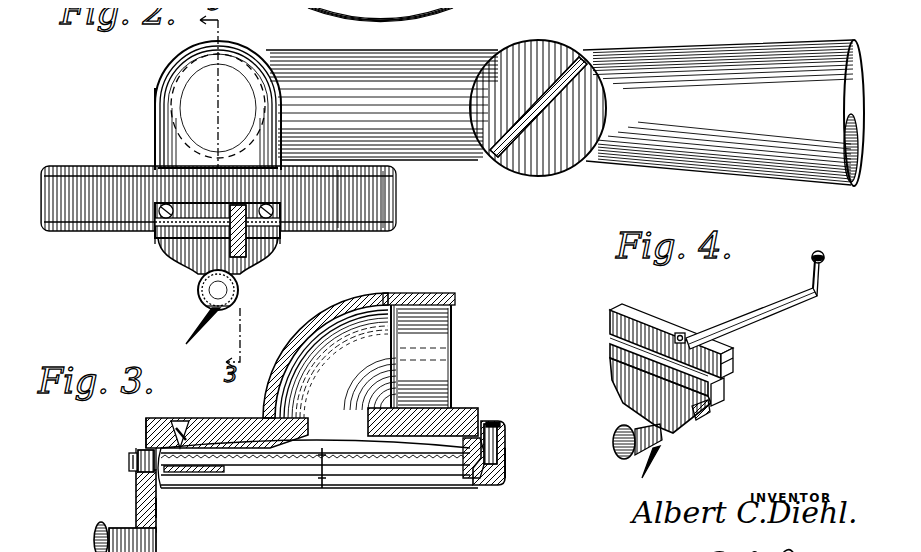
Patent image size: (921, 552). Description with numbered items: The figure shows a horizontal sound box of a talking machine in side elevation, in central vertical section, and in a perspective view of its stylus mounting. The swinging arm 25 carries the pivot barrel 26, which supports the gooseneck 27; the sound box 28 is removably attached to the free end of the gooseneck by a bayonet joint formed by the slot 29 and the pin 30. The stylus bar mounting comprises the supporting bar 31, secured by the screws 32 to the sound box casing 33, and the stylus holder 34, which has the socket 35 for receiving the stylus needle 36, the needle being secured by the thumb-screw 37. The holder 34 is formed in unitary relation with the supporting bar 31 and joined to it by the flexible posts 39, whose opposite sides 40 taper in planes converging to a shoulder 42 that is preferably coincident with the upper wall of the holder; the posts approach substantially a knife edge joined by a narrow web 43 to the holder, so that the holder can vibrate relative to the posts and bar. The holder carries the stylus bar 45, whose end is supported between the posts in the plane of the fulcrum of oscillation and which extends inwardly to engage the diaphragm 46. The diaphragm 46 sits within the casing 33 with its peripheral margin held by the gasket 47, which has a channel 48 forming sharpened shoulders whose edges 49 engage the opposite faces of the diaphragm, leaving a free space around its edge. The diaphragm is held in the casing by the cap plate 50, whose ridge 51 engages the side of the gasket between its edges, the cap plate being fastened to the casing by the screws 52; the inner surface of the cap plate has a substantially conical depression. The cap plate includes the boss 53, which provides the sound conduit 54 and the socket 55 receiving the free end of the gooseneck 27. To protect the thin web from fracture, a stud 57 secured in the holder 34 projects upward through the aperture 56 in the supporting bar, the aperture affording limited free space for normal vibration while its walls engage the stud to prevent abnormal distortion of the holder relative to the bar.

In FIG. 2, the swinging arm 25 is at (760, 58).
In FIG. 2, the pivot barrel 26 is at (515, 62).
In FIG. 2, the gooseneck 27 is at (390, 62).
In FIG. 2, the sound box 28 is at (388, 188).
In FIG. 2, the slot 29 is at (214, 40).
In FIG. 2, the pin 30 is at (150, 62).
In FIG. 2, the supporting bar 31 is at (150, 197).
In FIG. 3, the supporting bar 31 is at (130, 440).
In FIG. 4, the supporting bar 31 is at (656, 320).
In FIG. 2, the screws 32 is at (152, 214).
In FIG. 3, the screws 32 is at (121, 452).
In FIG. 2, the sound box casing 33 is at (355, 224).
In FIG. 3, the sound box casing 33 is at (498, 473).
In FIG. 2, the stylus holder 34 is at (195, 243).
In FIG. 3, the stylus holder 34 is at (149, 503).
In FIG. 4, the stylus holder 34 is at (640, 386).
In FIG. 2, the socket 35 is at (233, 283).
In FIG. 3, the socket 35 is at (149, 541).
In FIG. 2, the stylus needle 36 is at (188, 313).
In FIG. 4, the stylus needle 36 is at (648, 450).
In FIG. 2, the thumb-screw 37 is at (230, 294).
In FIG. 3, the thumb-screw 37 is at (85, 534).
In FIG. 4, the thumb-screw 37 is at (604, 436).
In FIG. 2, the flexible posts 39 is at (148, 224).
In FIG. 4, the flexible posts 39 is at (722, 366).
In FIG. 4, the sides 40 is at (606, 332).
In FIG. 4, the shoulder 42 is at (630, 345).
In FIG. 4, the web 43 is at (714, 390).
In FIG. 2, the stylus bar 45 is at (200, 250).
In FIG. 3, the stylus bar 45 is at (238, 482).
In FIG. 4, the stylus bar 45 is at (762, 312).
In FIG. 3, the diaphragm 46 is at (378, 452).
In FIG. 3, the gasket 47 is at (440, 458).
In FIG. 3, the channel 48 is at (470, 479).
In FIG. 3, the edges 49 is at (463, 420).
In FIG. 2, the cap plate 50 is at (72, 159).
In FIG. 3, the cap plate 50 is at (238, 405).
In FIG. 3, the ridge 51 is at (176, 416).
In FIG. 3, the screws 52 is at (490, 413).
In FIG. 2, the boss 53 is at (146, 95).
In FIG. 3, the boss 53 is at (322, 304).
In FIG. 3, the sound conduit 54 is at (286, 346).
In FIG. 3, the socket 55 is at (420, 340).
In FIG. 3, the aperture 56 is at (130, 467).
In FIG. 4, the aperture 56 is at (680, 330).
In FIG. 2, the stud 57 is at (200, 260).
In FIG. 3, the stud 57 is at (127, 488).
In FIG. 4, the stud 57 is at (692, 410).